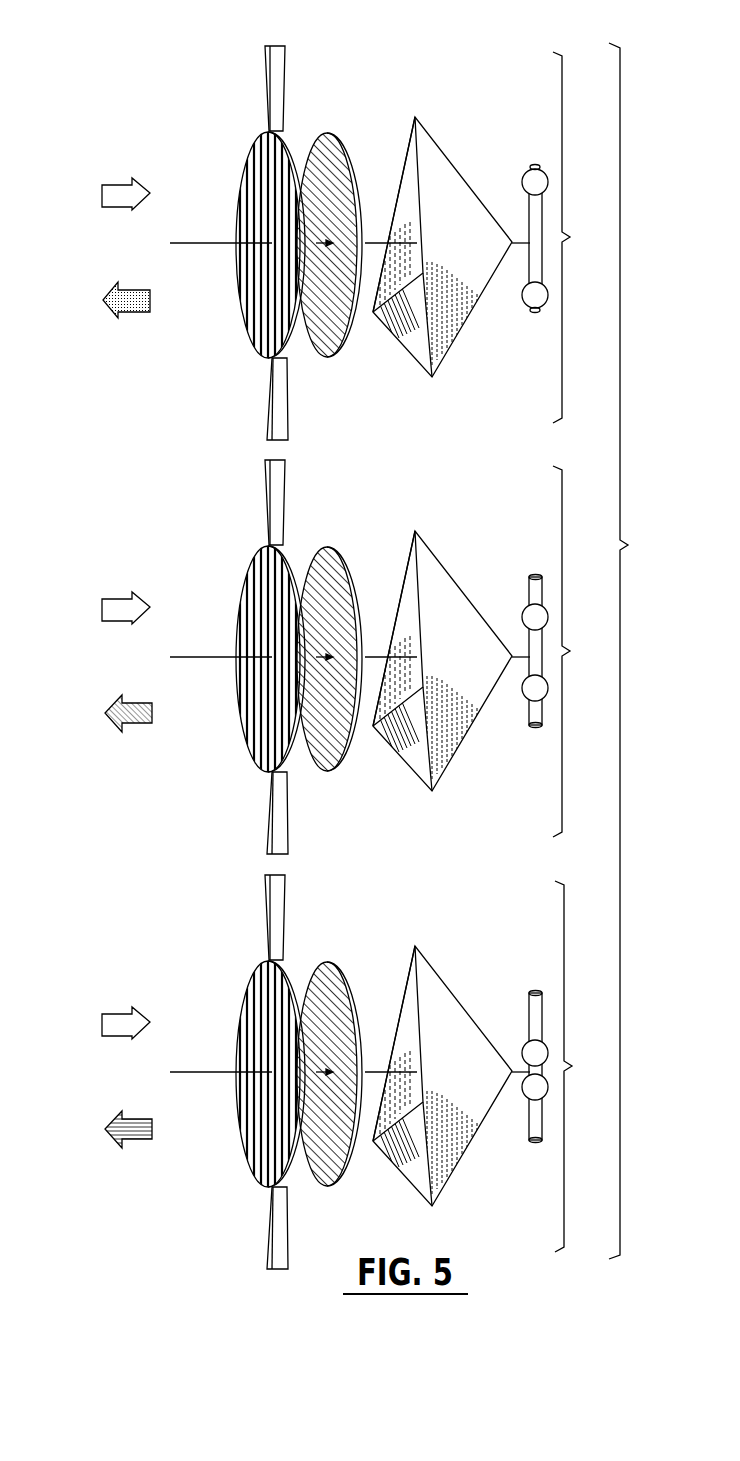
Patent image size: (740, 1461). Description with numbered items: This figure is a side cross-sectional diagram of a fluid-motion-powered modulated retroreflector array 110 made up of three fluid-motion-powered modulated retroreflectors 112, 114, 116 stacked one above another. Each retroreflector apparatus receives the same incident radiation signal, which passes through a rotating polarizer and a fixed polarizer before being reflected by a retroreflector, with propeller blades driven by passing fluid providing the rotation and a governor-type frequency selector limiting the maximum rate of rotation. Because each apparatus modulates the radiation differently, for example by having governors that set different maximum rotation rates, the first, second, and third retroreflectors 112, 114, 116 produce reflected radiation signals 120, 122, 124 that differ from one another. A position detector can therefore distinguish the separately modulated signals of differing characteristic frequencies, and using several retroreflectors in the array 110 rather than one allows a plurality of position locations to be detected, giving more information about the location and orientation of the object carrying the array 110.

The fluid-motion-powered modulated retroreflector array 110 is at (636, 651).
The fluid-motion-powered modulated retroreflector 112 is at (581, 237).
The fluid-motion-powered modulated retroreflector 114 is at (581, 651).
The fluid-motion-powered modulated retroreflector 116 is at (583, 1066).
The reflected radiation signal 120 is at (118, 295).
The reflected radiation signal 122 is at (96, 725).
The reflected radiation signal 124 is at (96, 1142).